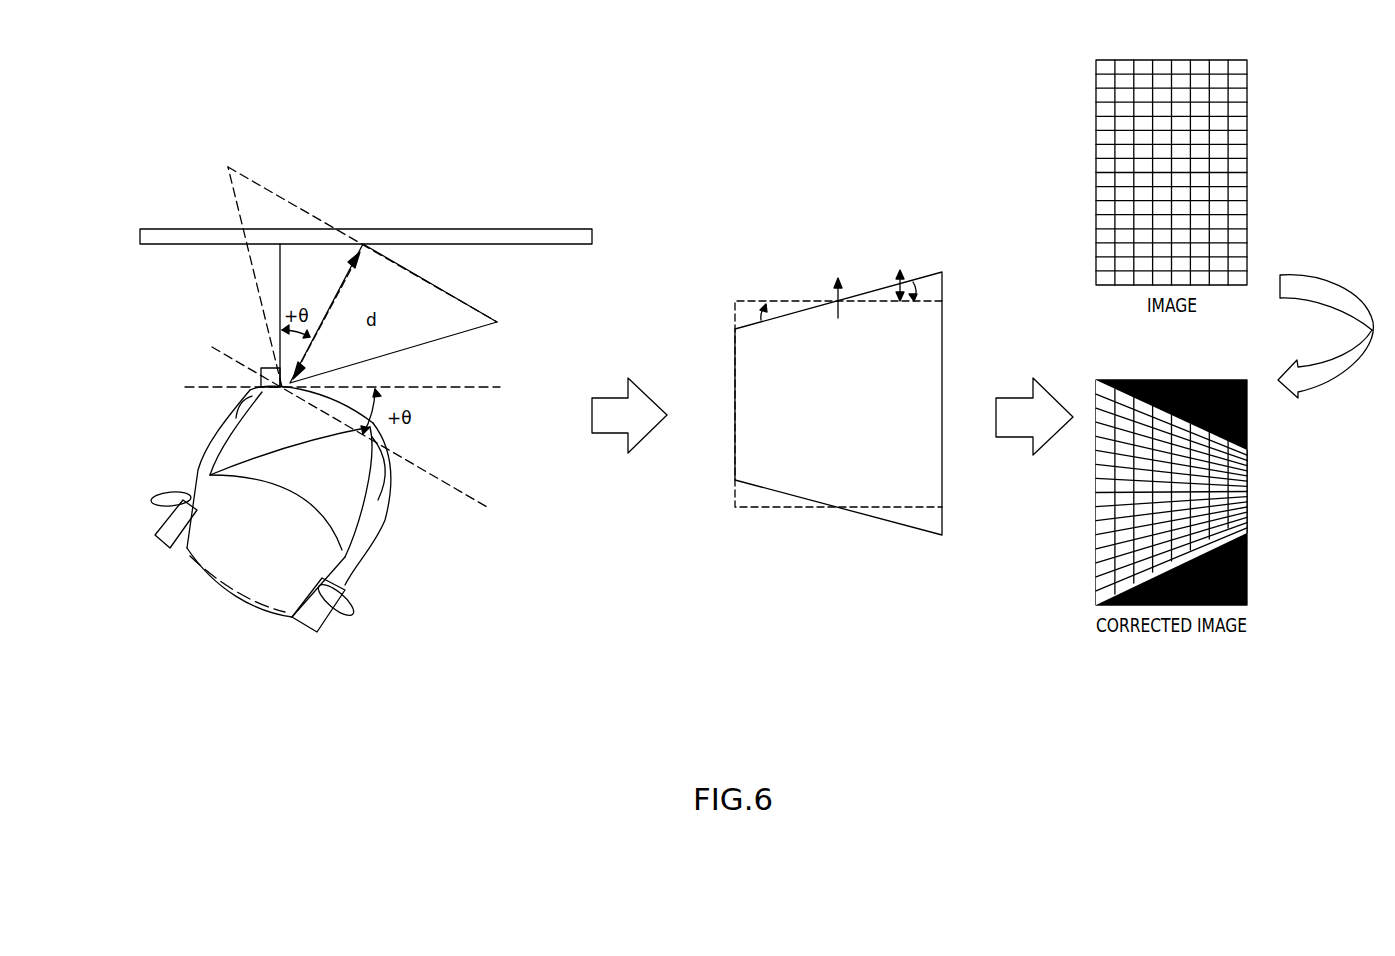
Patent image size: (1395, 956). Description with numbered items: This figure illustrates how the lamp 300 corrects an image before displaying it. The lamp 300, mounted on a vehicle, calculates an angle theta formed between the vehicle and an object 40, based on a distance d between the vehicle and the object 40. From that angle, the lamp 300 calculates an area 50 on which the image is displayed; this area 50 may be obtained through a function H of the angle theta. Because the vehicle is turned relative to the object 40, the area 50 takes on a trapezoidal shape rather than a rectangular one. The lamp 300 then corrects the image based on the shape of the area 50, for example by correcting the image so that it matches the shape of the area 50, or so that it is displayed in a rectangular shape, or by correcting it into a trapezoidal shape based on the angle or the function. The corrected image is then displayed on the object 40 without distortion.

The object 40 is at (365, 229).
The lamp 300 is at (250, 398).
The area 50 is at (832, 507).